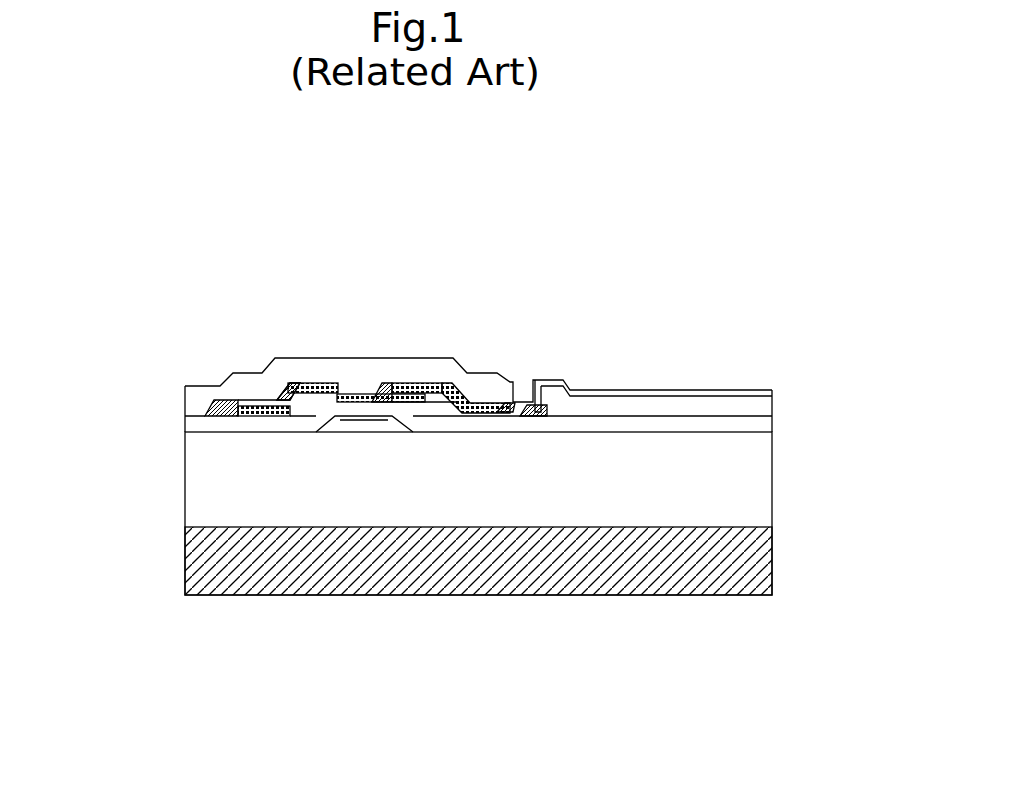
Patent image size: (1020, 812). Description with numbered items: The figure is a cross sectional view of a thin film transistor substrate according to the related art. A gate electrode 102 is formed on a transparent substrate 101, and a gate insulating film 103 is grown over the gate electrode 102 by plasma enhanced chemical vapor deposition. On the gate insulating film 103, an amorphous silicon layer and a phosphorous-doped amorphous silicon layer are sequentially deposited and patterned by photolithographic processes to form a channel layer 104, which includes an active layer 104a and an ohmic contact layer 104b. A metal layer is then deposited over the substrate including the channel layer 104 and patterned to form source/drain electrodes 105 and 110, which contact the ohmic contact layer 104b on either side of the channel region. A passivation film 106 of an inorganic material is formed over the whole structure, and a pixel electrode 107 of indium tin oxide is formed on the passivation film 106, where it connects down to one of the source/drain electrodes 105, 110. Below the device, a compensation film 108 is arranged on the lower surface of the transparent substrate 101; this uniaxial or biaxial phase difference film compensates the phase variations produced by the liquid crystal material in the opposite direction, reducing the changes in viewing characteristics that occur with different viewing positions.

The transparent substrate 101 is at (185, 472).
The gate electrode 102 is at (365, 425).
The gate insulating film 103 is at (535, 406).
The channel layer 104 is at (374, 315).
The active layer 104a is at (381, 335).
The ohmic contact layer 104b is at (313, 356).
The source/drain electrode 105 is at (268, 356).
The passivation film 106 is at (592, 412).
The pixel electrode 107 is at (702, 390).
The compensation film 108 is at (185, 570).
The source/drain electrode 110 is at (452, 380).